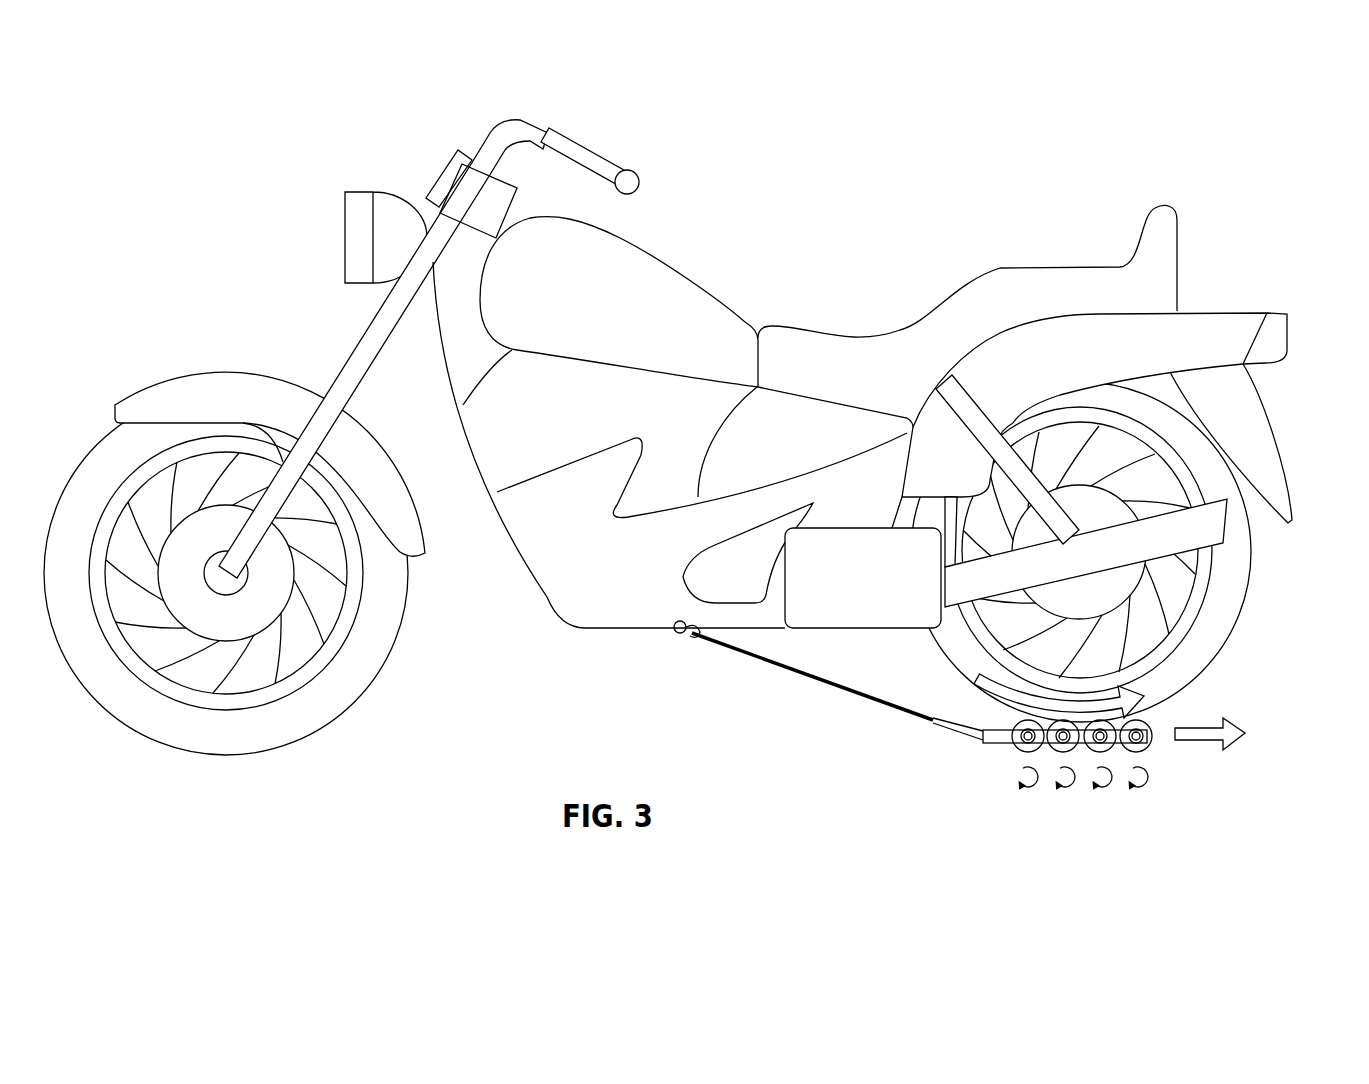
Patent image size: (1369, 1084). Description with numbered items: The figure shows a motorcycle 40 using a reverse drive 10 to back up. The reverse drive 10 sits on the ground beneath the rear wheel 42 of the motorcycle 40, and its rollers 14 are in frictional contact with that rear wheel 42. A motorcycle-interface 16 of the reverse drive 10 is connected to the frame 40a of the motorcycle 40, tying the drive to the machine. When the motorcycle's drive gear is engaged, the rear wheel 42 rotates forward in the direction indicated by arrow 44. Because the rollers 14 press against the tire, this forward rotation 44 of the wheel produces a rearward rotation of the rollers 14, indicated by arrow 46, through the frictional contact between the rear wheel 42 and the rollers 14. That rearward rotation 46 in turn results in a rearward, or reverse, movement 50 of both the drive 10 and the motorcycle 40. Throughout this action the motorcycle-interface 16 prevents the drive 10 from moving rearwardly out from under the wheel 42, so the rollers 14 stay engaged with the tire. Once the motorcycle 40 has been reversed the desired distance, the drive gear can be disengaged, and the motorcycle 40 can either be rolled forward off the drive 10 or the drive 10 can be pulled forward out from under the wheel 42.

The reverse drive 10 is at (1029, 780).
The rollers 14 is at (1027, 747).
The motorcycle-interface 16 is at (692, 635).
The motorcycle 40 is at (688, 429).
The frame 40a is at (583, 630).
The rear wheel 42 is at (1245, 605).
The arrow indicating forward rotation 44 is at (995, 686).
The arrow indicating rearward rotation 46 is at (1178, 817).
The rearward movement 50 is at (1197, 743).